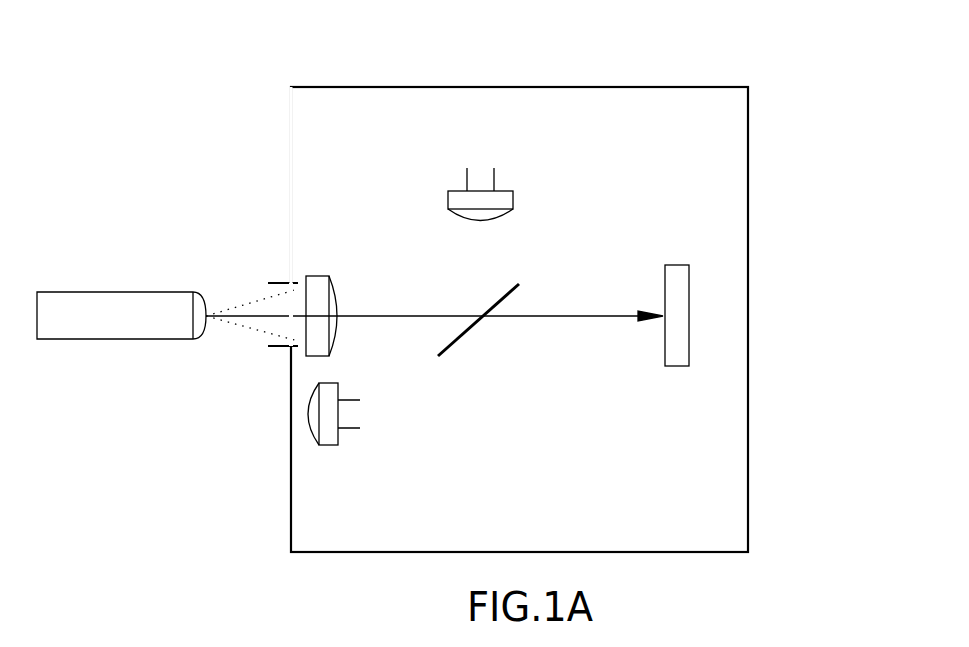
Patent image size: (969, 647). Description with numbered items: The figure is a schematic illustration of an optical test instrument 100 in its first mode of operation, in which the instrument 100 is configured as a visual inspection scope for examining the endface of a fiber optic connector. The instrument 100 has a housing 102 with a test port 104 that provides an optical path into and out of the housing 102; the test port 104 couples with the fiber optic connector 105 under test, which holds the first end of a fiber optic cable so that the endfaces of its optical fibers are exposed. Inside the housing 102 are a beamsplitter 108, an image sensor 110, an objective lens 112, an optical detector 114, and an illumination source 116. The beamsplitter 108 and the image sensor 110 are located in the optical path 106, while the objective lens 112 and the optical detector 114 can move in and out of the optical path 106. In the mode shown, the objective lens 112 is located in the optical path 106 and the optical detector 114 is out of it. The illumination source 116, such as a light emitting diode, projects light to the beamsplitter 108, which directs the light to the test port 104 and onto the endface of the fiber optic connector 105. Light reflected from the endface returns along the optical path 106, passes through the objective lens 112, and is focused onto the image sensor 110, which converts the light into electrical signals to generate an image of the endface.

The optical test instrument 100 is at (805, 126).
The housing 102 is at (750, 223).
The test port 104 is at (275, 350).
The fiber optic connector 105 is at (100, 340).
The optical path 106 is at (393, 313).
The beamsplitter 108 is at (462, 336).
The image sensor 110 is at (680, 368).
The objective lens 112 is at (318, 276).
The optical detector 114 is at (328, 447).
The illumination source 116 is at (513, 203).